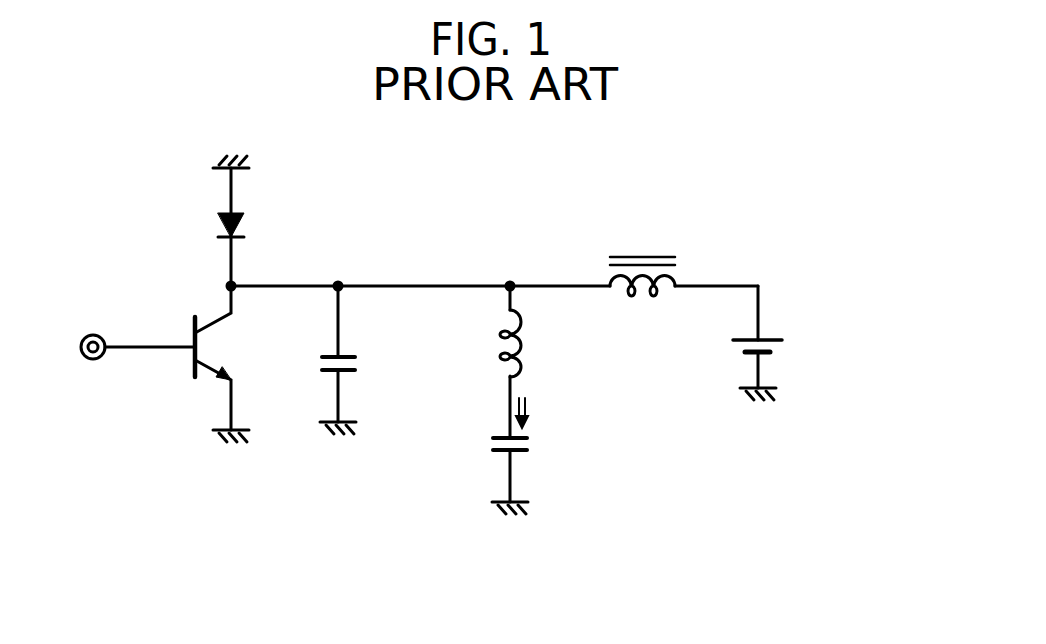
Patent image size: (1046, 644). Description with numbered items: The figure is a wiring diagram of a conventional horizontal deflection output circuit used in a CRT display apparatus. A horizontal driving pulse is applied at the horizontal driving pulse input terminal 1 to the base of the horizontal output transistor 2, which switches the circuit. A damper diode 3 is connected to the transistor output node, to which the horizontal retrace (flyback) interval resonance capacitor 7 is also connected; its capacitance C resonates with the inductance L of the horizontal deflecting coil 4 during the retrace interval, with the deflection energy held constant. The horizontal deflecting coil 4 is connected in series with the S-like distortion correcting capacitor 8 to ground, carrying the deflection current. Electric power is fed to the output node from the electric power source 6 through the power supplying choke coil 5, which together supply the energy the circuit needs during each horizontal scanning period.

The horizontal driving pulse input terminal 1 is at (93, 334).
The horizontal output transistor 2 is at (185, 367).
The damper diode 3 is at (252, 221).
The horizontal deflecting coil 4 is at (495, 357).
The power supplying choke coil 5 is at (650, 250).
The electric power source 6 is at (785, 330).
The horizontal retrace (flyback) interval resonance capacitor 7 is at (322, 380).
The S-like distortion correcting capacitor 8 is at (487, 450).